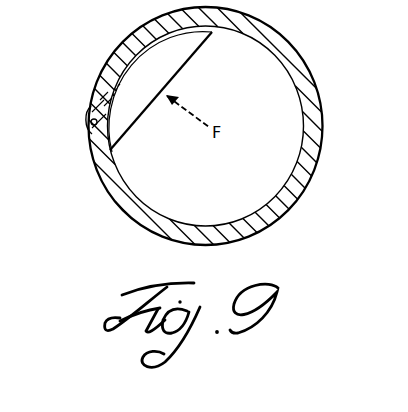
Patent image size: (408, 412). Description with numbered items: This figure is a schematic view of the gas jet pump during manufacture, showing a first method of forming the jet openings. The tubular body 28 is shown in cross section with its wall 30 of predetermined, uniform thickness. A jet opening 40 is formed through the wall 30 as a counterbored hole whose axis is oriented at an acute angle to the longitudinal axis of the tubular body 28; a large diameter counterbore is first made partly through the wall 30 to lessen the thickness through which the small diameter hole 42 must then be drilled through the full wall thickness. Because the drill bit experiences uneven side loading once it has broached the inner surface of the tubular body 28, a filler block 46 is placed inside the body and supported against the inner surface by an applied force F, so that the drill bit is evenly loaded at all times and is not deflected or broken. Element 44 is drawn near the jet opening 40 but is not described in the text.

The tubular body 28 is at (295, 191).
The wall 30 is at (313, 120).
The jet opening 40 is at (84, 116).
The hole 42 is at (100, 112).
The rivet 44 is at (95, 132).
The filler block 46 is at (133, 110).